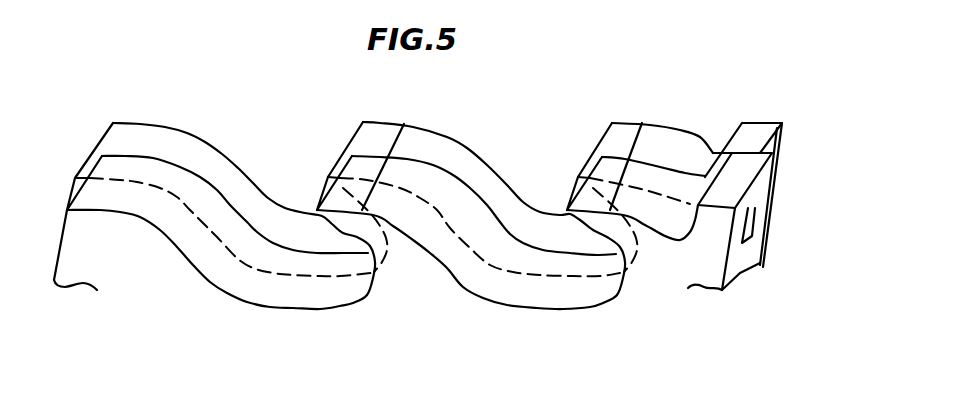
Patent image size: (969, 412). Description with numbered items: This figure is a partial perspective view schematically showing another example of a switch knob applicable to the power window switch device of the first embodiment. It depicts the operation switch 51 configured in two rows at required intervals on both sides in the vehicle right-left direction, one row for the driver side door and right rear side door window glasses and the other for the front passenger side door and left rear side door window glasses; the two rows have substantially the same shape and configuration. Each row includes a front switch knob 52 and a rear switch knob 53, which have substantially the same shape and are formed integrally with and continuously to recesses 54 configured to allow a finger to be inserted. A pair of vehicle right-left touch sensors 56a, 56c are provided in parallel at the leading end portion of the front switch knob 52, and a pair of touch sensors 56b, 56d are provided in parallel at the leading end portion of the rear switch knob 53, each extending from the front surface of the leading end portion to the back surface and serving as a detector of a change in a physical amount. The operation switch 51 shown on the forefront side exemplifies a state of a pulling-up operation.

The operation switch 51 is at (133, 137).
The front switch knob 52 is at (446, 188).
The rear switch knob 53 is at (649, 179).
The recess 54 is at (306, 228).
The touch sensor 56a is at (373, 138).
The touch sensor 56b is at (617, 170).
The touch sensor 56c is at (333, 200).
The touch sensor 56d is at (580, 200).